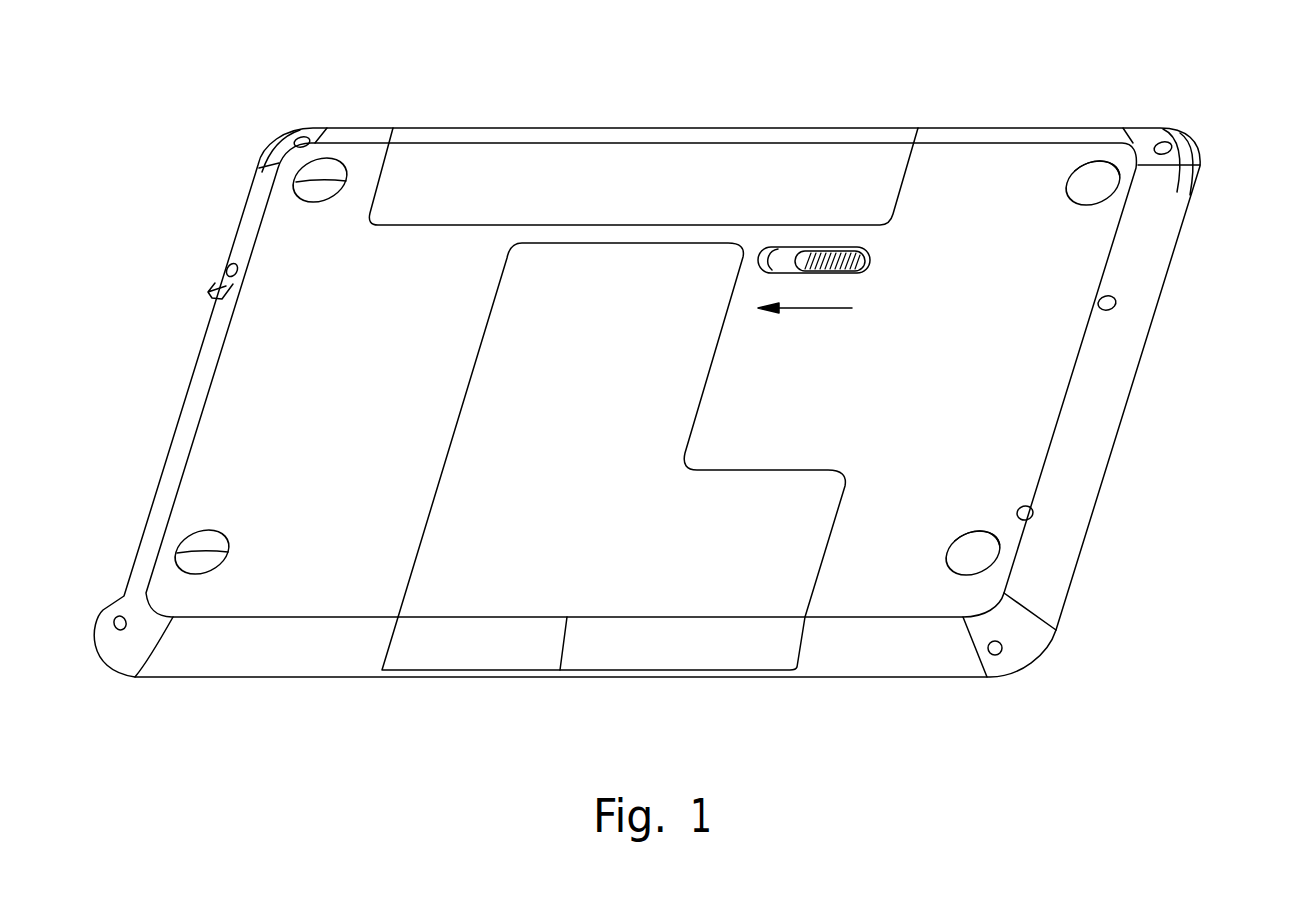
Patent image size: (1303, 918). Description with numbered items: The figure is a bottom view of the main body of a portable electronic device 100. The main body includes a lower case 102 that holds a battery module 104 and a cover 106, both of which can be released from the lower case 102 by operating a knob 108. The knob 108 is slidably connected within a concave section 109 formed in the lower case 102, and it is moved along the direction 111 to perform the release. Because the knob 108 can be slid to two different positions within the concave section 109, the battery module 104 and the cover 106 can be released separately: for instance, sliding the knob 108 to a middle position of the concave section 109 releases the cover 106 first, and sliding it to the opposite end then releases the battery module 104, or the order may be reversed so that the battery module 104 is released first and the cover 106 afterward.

The portable electronic device 100 is at (665, 392).
The lower case 102 is at (1040, 372).
The battery module 104 is at (516, 158).
The cover 106 is at (698, 578).
The knob 108 is at (828, 250).
The concave section 109 is at (772, 262).
The direction 111 is at (813, 310).